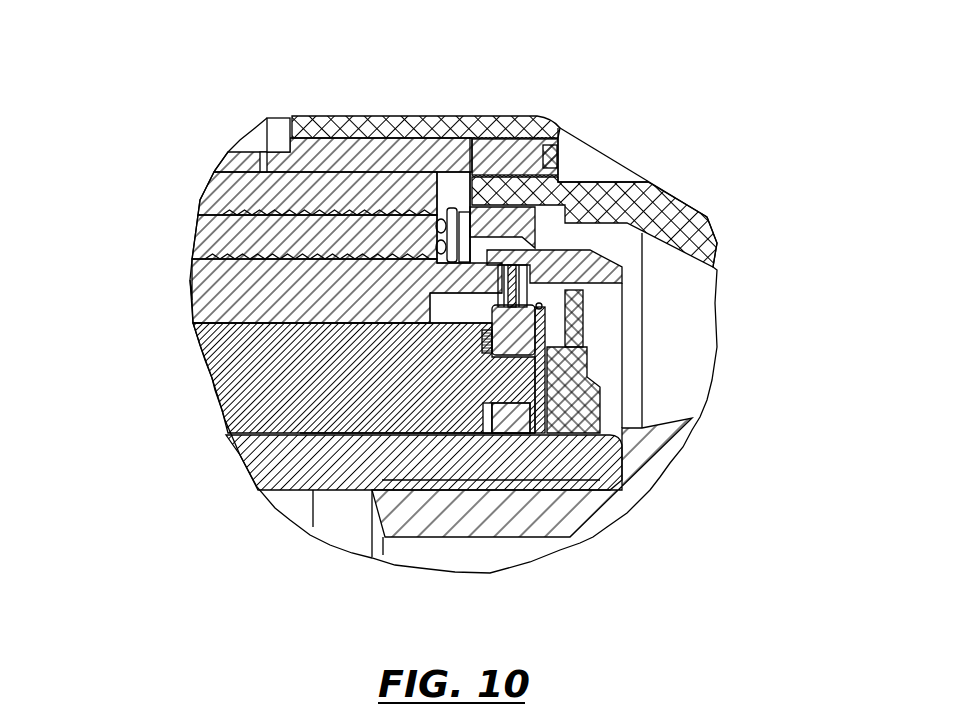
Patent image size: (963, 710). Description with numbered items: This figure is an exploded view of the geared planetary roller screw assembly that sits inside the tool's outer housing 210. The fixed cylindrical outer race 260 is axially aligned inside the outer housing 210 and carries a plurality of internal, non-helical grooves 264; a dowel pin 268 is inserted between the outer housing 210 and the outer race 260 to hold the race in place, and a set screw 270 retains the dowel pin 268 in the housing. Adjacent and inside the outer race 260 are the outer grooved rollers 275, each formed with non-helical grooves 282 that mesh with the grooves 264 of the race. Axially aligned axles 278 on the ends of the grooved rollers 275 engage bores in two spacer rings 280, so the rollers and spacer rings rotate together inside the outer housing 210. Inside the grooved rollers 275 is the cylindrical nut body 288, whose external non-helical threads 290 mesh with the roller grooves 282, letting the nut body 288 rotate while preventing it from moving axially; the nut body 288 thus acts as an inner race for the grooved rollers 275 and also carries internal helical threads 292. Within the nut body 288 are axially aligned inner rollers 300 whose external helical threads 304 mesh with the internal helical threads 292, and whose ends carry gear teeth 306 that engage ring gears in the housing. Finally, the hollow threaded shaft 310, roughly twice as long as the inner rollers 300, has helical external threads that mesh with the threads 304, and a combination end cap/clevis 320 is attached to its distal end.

The outer housing 210 is at (347, 117).
The outer race 260 is at (210, 192).
The internal non-helical grooves 264 is at (217, 194).
The dowel pin 268 is at (304, 117).
The set screw 270 is at (558, 135).
The outer grooved rollers 275 is at (200, 237).
The axles 278 is at (437, 207).
The spacer rings 280 is at (478, 140).
The non-helical grooves 282 is at (218, 221).
The nut body 288 is at (190, 293).
The external non-helical threads 290 is at (200, 276).
The internal helical threads 292 is at (193, 317).
The inner rollers 300 is at (197, 372).
The external helical threads 304 is at (280, 330).
The gear teeth 306 is at (563, 350).
The threaded shaft 310 is at (240, 467).
The combination end cap/clevis 320 is at (587, 520).